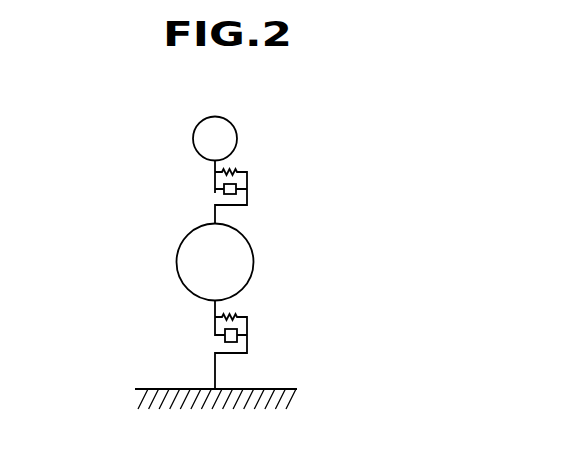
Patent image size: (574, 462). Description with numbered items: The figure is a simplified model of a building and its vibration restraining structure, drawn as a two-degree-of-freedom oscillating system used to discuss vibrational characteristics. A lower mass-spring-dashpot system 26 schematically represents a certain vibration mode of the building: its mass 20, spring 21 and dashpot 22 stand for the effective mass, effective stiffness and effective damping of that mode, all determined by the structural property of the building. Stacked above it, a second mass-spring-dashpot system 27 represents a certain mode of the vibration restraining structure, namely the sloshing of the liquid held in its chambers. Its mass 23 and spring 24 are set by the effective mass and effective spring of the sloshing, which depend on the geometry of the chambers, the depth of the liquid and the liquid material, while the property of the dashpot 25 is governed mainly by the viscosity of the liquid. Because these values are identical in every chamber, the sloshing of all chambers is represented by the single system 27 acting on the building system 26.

The mass 20 is at (252, 258).
The spring 21 is at (238, 317).
The dashpot 22 is at (224, 340).
The mass 23 is at (237, 141).
The spring 24 is at (240, 171).
The dashpot 25 is at (222, 195).
The mass-spring-dashpot system 26 is at (158, 262).
The mass-spring-dashpot system 27 is at (136, 135).